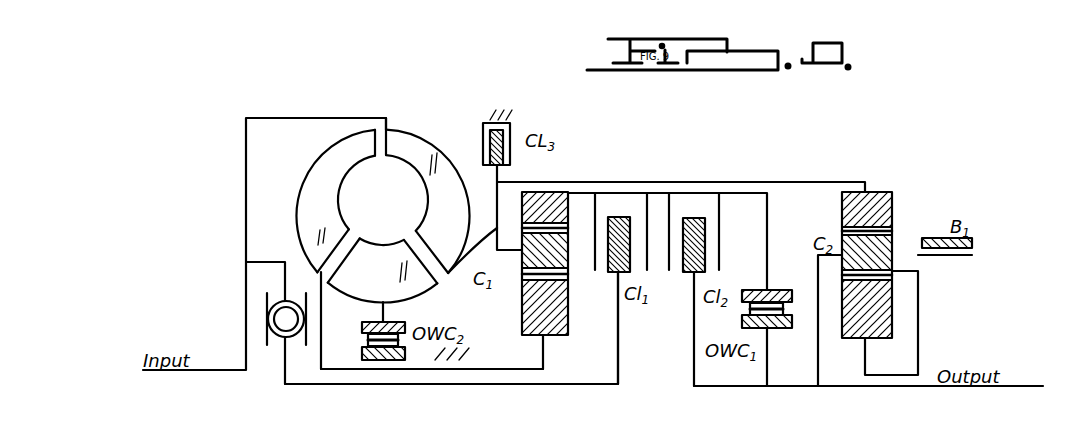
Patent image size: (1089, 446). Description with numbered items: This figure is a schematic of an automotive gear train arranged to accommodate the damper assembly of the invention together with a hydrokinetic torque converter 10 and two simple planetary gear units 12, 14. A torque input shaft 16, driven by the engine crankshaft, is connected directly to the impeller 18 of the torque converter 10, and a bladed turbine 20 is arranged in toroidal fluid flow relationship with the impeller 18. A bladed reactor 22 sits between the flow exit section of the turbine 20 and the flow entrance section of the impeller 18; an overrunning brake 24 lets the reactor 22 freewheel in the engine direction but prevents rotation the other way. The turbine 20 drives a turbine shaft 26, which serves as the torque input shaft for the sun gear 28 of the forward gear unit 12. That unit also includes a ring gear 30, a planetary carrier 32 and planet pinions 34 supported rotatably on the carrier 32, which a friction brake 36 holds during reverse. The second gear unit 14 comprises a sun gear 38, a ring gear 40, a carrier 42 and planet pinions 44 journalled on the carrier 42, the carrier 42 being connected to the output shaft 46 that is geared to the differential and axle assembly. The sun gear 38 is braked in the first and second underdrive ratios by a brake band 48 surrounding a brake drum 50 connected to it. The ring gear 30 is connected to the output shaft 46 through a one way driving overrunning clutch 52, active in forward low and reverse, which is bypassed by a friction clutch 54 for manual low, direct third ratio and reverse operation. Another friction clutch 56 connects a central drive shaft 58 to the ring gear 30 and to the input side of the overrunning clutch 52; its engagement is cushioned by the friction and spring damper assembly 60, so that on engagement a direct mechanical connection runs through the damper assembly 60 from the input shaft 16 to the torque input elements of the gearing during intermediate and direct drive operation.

The hydrokinetic torque converter 10 is at (382, 187).
The planetary gear unit 12 is at (555, 245).
The planetary gear unit 14 is at (894, 236).
The torque input shaft 16 is at (178, 372).
The impeller 18 is at (457, 212).
The bladed turbine 20 is at (338, 181).
The reactor 22 is at (365, 253).
The overrunning brake 24 is at (373, 361).
The turbine shaft 26 is at (481, 371).
The sun gear 28 is at (556, 327).
The ring gear 30 is at (557, 192).
The planetary carrier 32 is at (468, 270).
The planet pinions 34 is at (521, 272).
The friction brake 36 is at (511, 126).
The sun gear 38 is at (888, 327).
The ring gear 40 is at (878, 192).
The carrier 42 is at (815, 313).
The planet pinions 44 is at (900, 271).
The output shaft 46 is at (880, 388).
The brake band 48 is at (973, 247).
The brake drum 50 is at (947, 258).
The one way driving overrunning clutch 52 is at (773, 292).
The friction clutch 54 is at (703, 218).
The friction clutch 56 is at (630, 218).
The central drive shaft 58 is at (522, 386).
The friction and spring damper assembly 60 is at (262, 316).